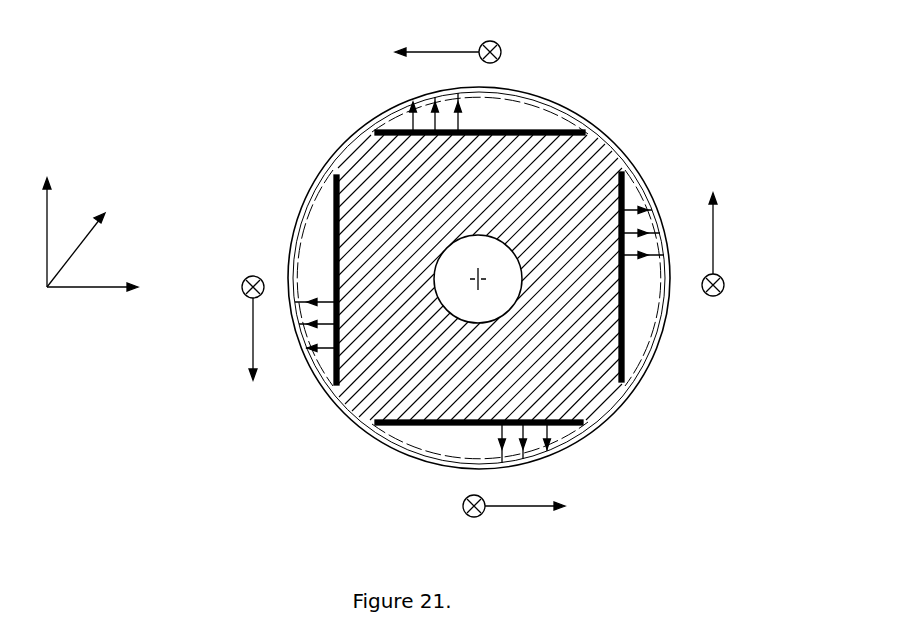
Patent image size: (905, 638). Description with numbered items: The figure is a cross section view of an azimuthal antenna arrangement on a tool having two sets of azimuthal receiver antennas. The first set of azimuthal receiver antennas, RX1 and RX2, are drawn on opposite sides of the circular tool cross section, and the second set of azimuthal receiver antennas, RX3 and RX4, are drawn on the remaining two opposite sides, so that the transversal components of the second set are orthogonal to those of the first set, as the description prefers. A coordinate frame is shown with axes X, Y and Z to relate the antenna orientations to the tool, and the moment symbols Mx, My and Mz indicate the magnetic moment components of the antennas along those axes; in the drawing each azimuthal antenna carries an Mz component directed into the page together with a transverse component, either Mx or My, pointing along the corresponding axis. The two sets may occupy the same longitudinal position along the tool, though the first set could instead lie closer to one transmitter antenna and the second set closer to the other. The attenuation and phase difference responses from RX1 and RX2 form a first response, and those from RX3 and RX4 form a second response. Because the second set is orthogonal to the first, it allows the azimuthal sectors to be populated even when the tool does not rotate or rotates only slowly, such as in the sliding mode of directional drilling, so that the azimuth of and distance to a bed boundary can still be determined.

The azimuthal receiver antenna RX1 is at (323, 204).
The azimuthal receiver antenna RX2 is at (648, 354).
The azimuthal receiver antenna RX3 is at (532, 118).
The azimuthal receiver antenna RX4 is at (426, 446).
The moment about x-axis Mx is at (483, 285).
The moment about y-axis My is at (481, 279).
The moment about z-axis Mz is at (483, 281).
The x-axis X is at (47, 220).
The y-axis Y is at (103, 287).
The z-axis Z is at (83, 238).